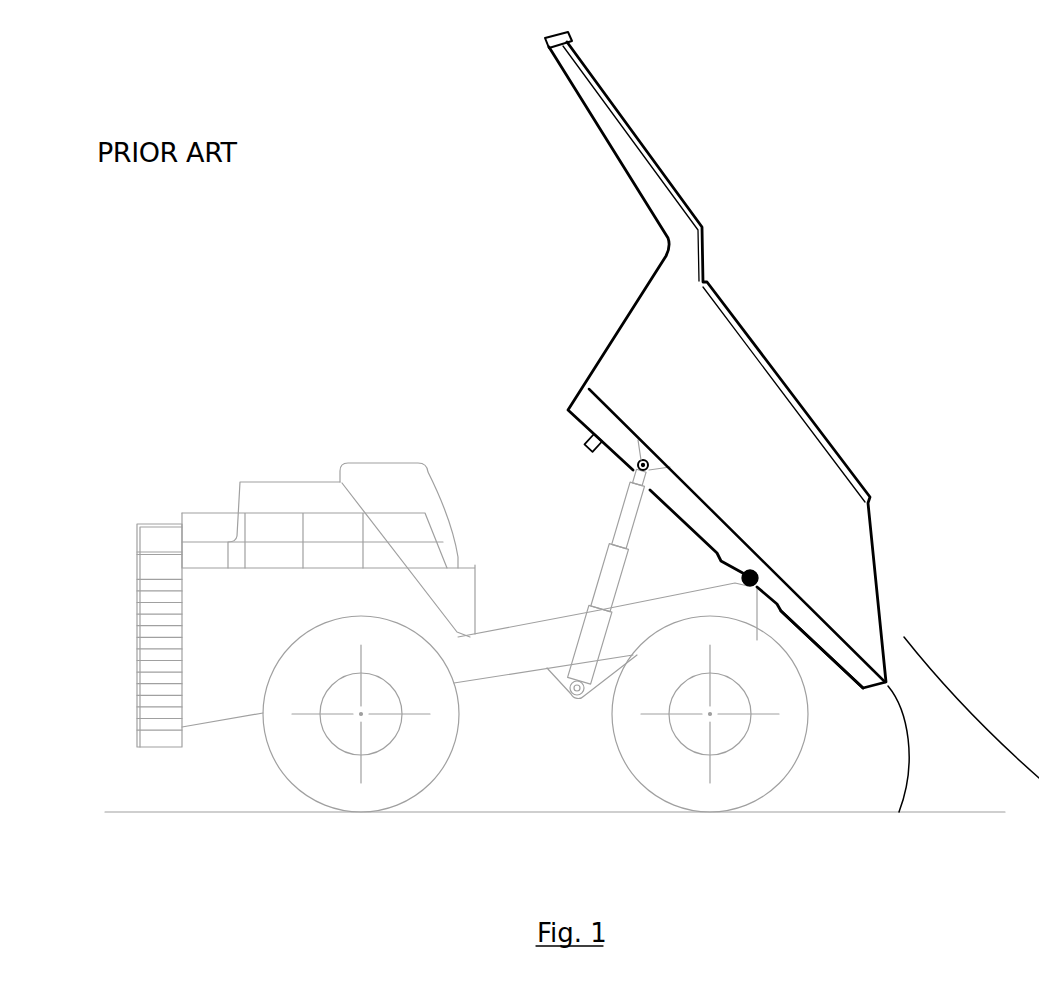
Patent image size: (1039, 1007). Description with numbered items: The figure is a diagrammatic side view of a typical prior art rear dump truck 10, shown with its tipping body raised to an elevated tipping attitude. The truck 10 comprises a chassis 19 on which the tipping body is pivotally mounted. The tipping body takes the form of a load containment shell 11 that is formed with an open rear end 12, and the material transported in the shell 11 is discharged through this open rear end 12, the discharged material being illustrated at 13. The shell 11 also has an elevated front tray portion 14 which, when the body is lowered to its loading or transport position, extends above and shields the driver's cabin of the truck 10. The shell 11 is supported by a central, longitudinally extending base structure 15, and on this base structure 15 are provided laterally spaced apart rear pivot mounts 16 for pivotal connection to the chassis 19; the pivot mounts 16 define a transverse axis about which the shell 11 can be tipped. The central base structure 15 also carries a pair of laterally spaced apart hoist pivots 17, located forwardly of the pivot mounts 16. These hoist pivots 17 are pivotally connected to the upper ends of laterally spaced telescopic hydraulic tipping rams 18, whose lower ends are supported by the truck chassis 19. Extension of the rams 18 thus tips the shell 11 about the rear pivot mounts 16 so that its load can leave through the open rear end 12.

The rear dump truck 10 is at (295, 825).
The load containment shell 11 is at (726, 360).
The open rear end 12 is at (885, 577).
The discharged material 13 is at (971, 707).
The elevated front tray portion 14 is at (618, 137).
The central base structure 15 is at (703, 522).
The rear pivot mounts 16 is at (758, 575).
The hoist pivots 17 is at (645, 455).
The telescopic hydraulic tipping rams 18 is at (612, 570).
The chassis 19 is at (605, 640).